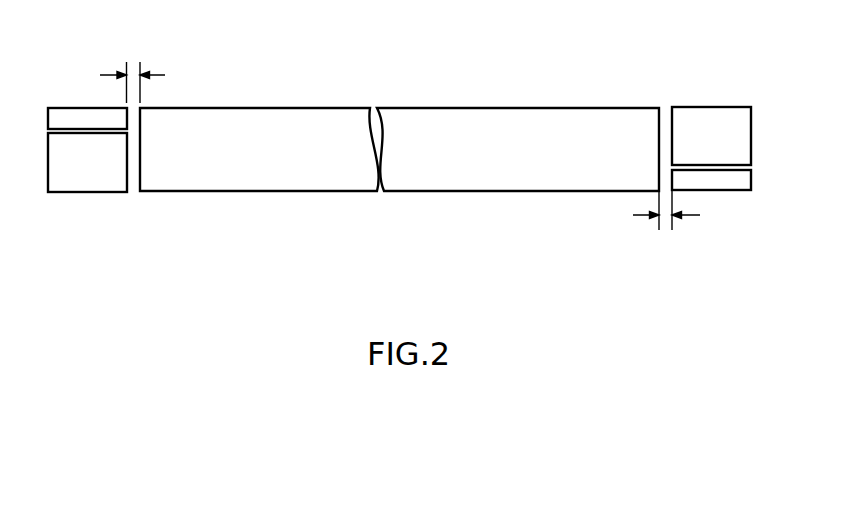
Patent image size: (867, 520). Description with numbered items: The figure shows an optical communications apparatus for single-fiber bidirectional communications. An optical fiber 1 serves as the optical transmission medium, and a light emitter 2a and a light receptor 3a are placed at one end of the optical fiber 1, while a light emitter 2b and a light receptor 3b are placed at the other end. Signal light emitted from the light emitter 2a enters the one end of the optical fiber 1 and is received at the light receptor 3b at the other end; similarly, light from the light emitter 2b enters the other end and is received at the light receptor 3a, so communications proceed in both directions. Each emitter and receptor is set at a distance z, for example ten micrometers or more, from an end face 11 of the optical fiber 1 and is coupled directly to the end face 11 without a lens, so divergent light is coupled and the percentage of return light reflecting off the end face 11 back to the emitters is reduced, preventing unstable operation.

The optical fiber 1 is at (300, 108).
The light emitter 2a is at (68, 115).
The light receptor 3a is at (85, 187).
The light emitter 2b is at (741, 187).
The light receptor 3b is at (722, 112).
The end face 11 is at (140, 170).
The distance z is at (400, 143).